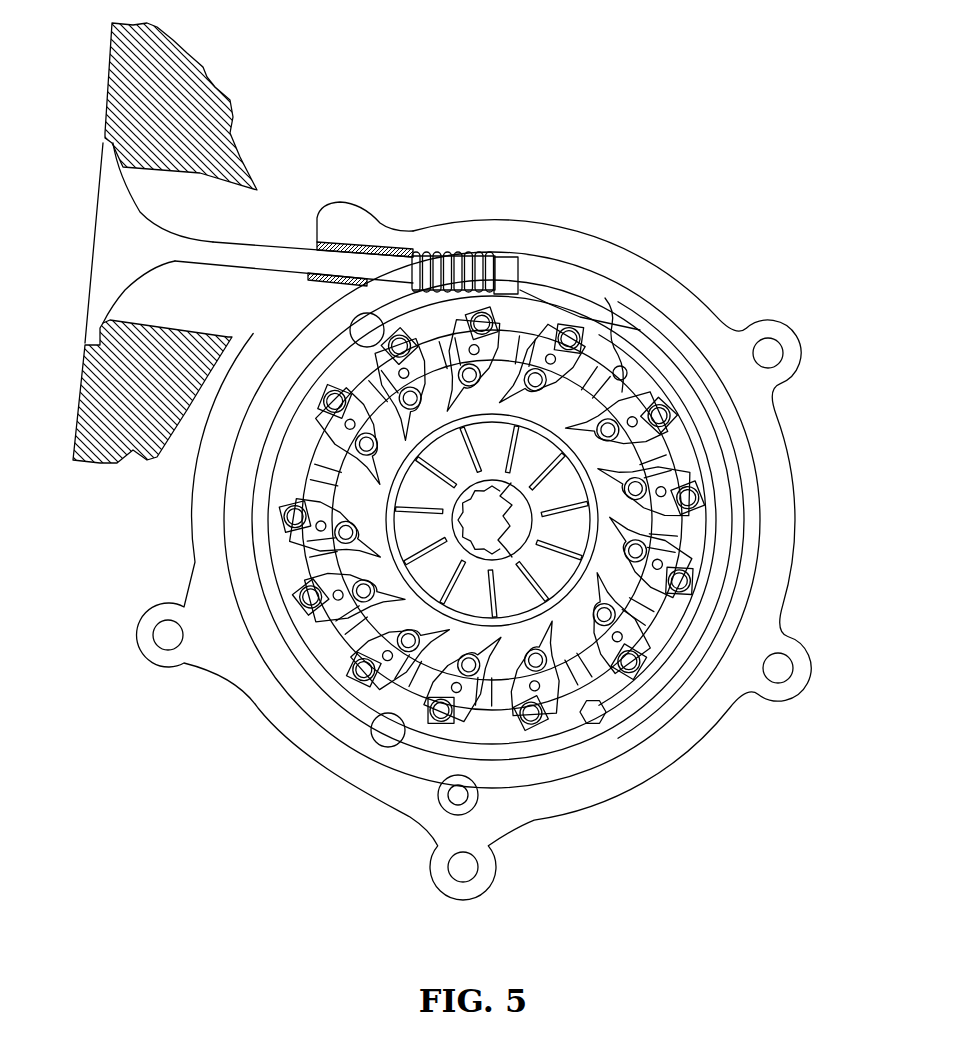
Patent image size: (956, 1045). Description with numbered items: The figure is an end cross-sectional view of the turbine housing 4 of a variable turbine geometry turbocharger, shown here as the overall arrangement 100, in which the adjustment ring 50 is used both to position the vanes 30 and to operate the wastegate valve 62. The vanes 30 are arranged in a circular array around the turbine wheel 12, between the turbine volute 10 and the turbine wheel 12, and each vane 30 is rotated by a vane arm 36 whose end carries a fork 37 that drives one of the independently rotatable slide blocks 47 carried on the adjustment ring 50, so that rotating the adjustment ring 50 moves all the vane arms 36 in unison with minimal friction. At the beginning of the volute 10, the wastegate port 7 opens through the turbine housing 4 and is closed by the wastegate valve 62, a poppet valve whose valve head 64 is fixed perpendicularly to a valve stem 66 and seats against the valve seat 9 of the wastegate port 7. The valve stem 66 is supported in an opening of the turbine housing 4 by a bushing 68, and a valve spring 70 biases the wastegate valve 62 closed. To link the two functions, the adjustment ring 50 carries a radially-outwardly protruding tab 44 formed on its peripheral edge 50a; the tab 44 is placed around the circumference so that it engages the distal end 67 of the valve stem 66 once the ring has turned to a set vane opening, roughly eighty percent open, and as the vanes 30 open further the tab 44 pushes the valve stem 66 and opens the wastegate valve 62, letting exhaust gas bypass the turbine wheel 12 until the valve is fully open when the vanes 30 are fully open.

The clutch assembly 100 is at (524, 446).
The turbine volute 10 is at (733, 443).
The turbine wheel 12 is at (522, 593).
The vanes 30 is at (590, 625).
The vane arm 36 is at (617, 407).
The forks 37 is at (650, 397).
The tab 44 is at (517, 290).
The slide blocks 47 is at (680, 600).
The adjustment ring 50 is at (612, 340).
The peripheral edge 50a is at (563, 320).
The turbine housing 4 is at (178, 92).
The wastegate port 7 is at (182, 203).
The valve seat 9 is at (87, 343).
The wastegate valve 62 is at (110, 273).
The valve head 64 is at (117, 215).
The valve stem 66 is at (268, 248).
The distal end 67 is at (513, 283).
The bushing 68 is at (367, 240).
The valve spring 70 is at (427, 245).